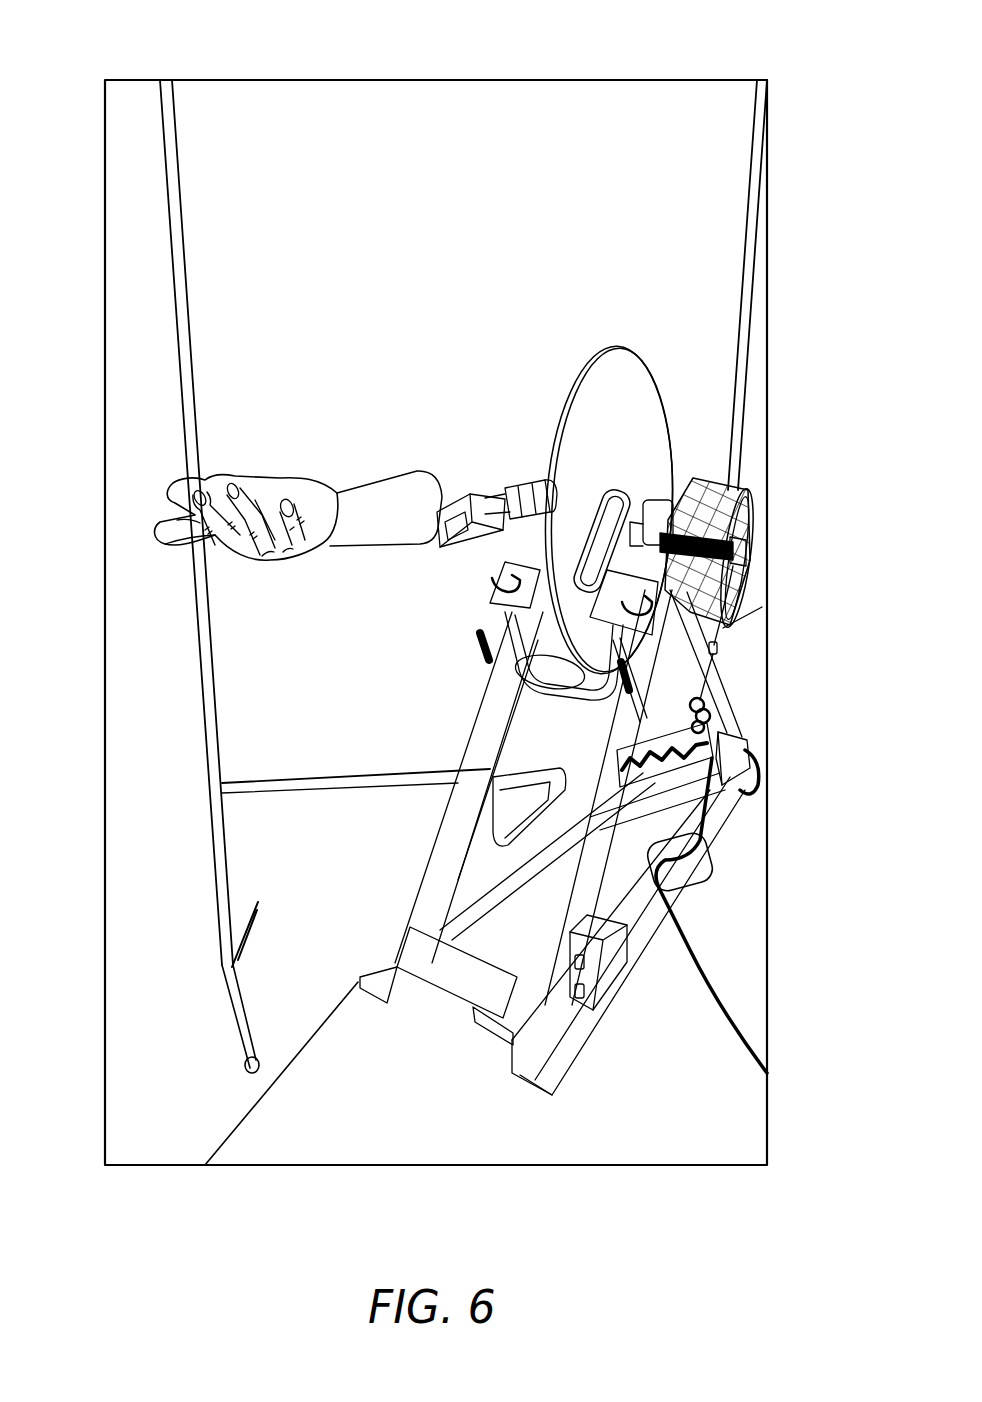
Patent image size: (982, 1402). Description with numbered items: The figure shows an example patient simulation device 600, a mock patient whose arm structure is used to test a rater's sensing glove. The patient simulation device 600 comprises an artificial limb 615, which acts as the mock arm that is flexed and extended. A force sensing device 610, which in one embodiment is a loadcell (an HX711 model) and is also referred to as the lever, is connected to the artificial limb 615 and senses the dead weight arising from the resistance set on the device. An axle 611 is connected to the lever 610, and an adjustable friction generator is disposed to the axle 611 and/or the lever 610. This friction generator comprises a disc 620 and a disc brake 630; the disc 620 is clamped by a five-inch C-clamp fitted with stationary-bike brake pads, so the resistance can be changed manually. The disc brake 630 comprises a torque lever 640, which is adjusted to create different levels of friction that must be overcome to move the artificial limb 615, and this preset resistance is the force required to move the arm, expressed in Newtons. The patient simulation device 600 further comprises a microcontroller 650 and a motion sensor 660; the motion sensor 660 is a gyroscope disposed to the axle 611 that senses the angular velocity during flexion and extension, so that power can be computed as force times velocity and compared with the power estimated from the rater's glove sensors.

The patient simulation device 600 is at (108, 38).
The artificial limb 615 is at (320, 498).
The force sensing device 610 is at (443, 508).
The axle 611 is at (538, 500).
The disc 620 is at (626, 372).
The disc brake 630 is at (714, 526).
The torque lever 640 is at (720, 628).
The microcontroller 650 is at (748, 748).
The motion sensor 660 is at (700, 500).